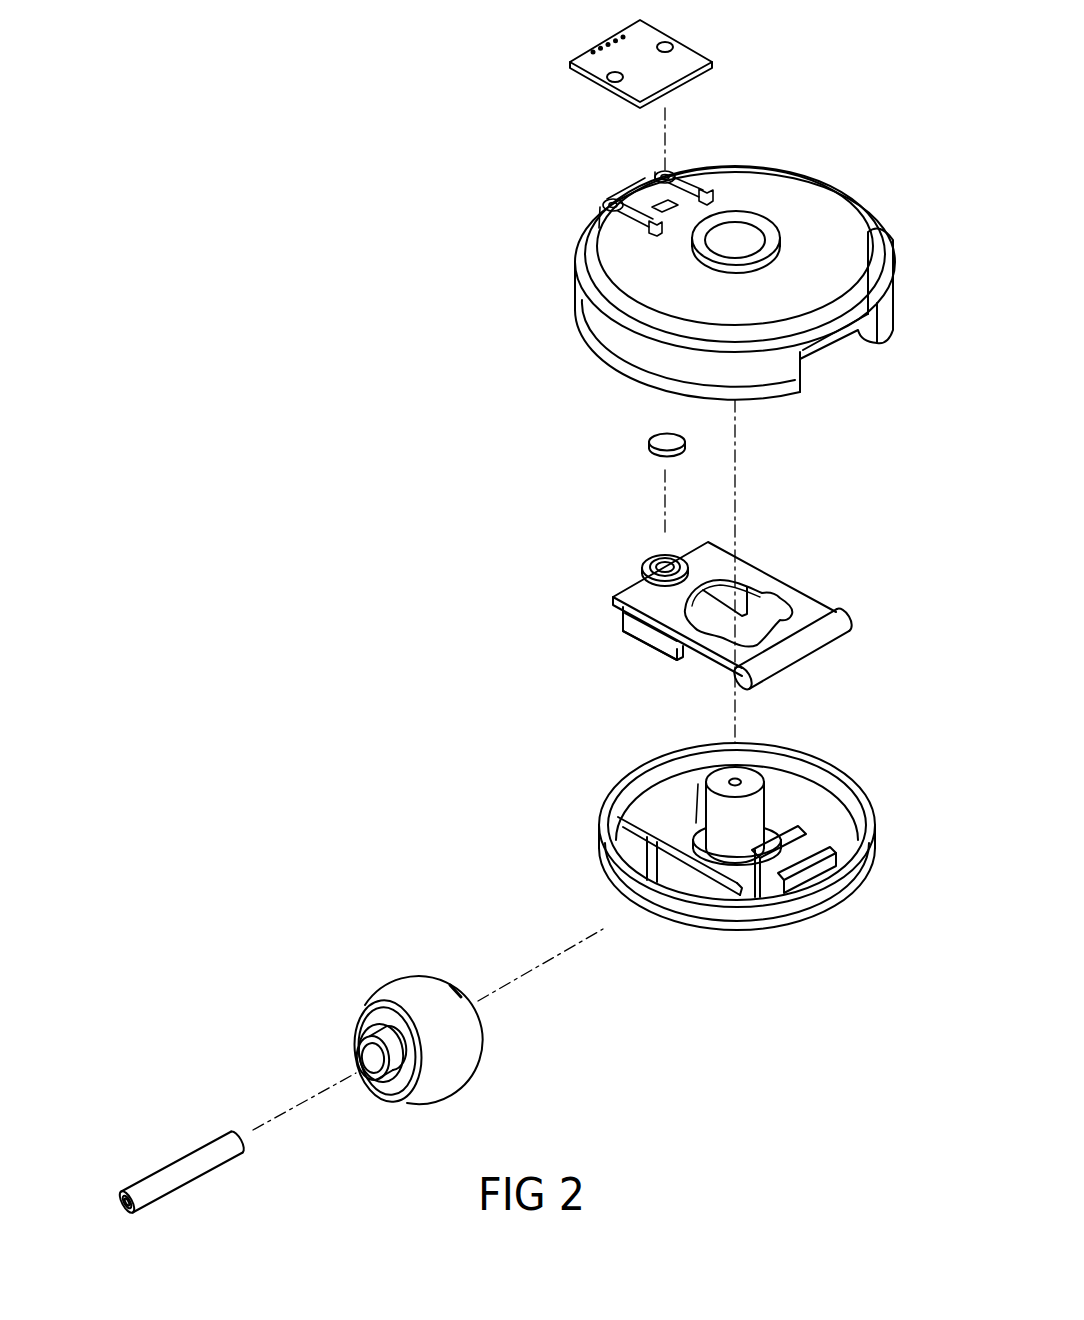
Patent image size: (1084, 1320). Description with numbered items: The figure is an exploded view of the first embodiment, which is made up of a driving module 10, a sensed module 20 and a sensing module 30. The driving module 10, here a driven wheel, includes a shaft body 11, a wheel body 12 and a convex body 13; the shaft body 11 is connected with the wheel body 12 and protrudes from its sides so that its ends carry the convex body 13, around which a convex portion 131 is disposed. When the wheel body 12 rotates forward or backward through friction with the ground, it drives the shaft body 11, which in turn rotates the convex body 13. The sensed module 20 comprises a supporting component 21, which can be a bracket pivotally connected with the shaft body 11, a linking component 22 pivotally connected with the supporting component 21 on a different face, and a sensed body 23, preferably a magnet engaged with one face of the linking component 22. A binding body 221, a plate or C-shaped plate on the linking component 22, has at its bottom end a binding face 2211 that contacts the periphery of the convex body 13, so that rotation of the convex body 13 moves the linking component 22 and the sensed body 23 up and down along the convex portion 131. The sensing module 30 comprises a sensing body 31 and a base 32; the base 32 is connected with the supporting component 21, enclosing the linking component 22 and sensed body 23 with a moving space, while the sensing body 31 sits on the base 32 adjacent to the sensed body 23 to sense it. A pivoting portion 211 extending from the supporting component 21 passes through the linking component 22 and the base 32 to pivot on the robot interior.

The driving module 10 is at (317, 922).
The shaft body 11 is at (208, 1150).
The wheel body 12 is at (422, 993).
The convex body 13 is at (373, 1060).
The convex portion 131 is at (407, 1027).
The sensed module 20 is at (494, 416).
The supporting component 21 is at (603, 832).
The pivoting portion 211 is at (713, 782).
The linking component 22 is at (636, 580).
The binding body 221 is at (615, 605).
The binding face 2211 is at (640, 629).
The sensed body 23 is at (657, 443).
The sensing module 30 is at (442, 43).
The sensing body 31 is at (573, 58).
The base 32 is at (617, 245).